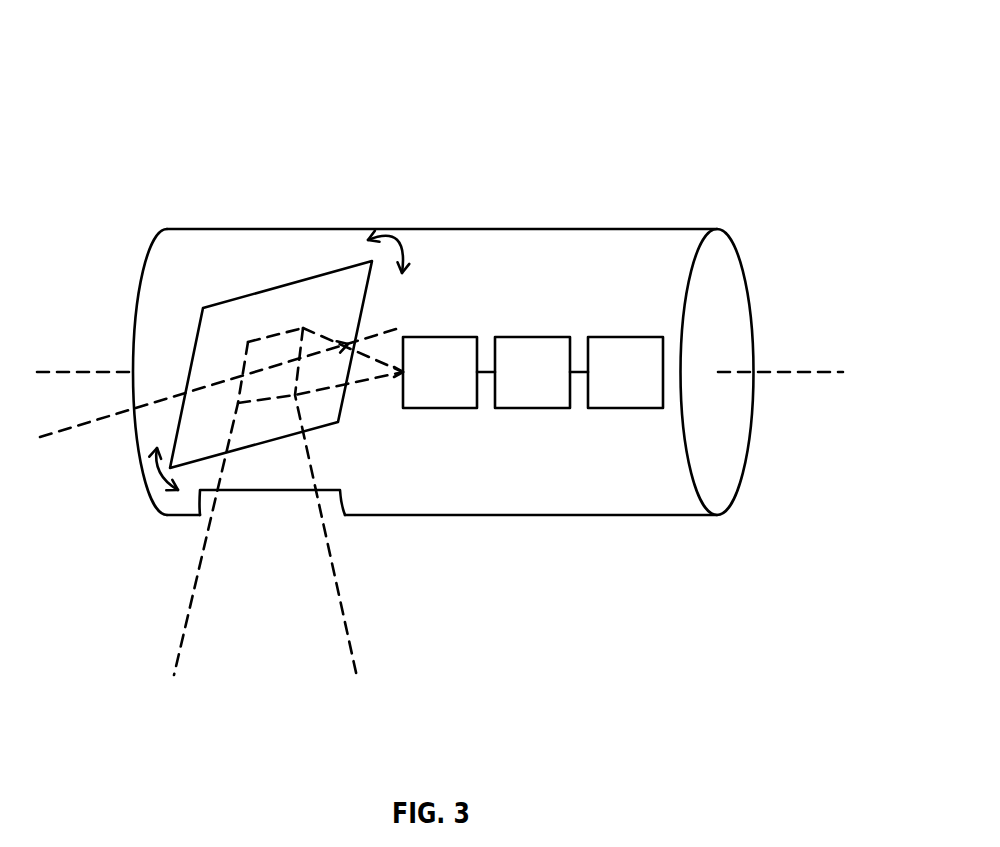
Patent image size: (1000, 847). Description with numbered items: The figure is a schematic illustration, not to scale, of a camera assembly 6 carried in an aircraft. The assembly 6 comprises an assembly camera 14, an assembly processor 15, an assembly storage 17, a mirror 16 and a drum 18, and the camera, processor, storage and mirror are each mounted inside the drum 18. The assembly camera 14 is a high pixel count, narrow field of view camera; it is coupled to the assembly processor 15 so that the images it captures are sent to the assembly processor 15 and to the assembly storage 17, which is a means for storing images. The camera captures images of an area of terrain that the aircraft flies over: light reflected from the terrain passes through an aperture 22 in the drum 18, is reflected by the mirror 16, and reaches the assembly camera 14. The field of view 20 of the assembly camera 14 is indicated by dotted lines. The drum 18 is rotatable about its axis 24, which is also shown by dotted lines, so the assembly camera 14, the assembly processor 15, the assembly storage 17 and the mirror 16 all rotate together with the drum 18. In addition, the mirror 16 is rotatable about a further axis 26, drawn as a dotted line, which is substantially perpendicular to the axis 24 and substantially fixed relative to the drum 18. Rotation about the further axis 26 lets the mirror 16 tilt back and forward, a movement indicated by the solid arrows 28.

The assembly 6 is at (604, 64).
The assembly camera 14 is at (429, 384).
The assembly processor 15 is at (521, 384).
The mirror 16 is at (227, 300).
The assembly storage 17 is at (614, 384).
The drum 18 is at (637, 228).
The field of view 20 is at (180, 653).
The aperture 22 is at (295, 490).
The axis 24 is at (48, 370).
The further axis 26 is at (53, 433).
The tilting of the mirror 28 is at (394, 233).